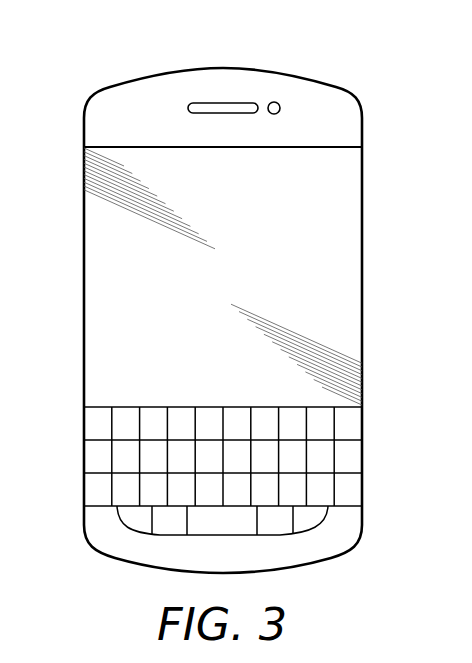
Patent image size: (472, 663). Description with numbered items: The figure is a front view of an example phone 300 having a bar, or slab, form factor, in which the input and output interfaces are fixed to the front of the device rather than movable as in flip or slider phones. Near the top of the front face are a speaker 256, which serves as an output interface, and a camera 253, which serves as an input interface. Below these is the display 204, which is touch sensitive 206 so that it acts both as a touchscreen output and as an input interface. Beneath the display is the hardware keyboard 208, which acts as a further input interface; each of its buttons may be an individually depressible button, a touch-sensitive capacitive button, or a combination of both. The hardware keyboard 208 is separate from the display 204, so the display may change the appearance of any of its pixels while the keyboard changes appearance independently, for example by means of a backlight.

The phone 300 is at (382, 68).
The speaker 256 is at (222, 107).
The camera 253 is at (273, 102).
The display 204 is at (84, 172).
The input interface 206 is at (84, 237).
The hardware keyboard 208 is at (84, 423).